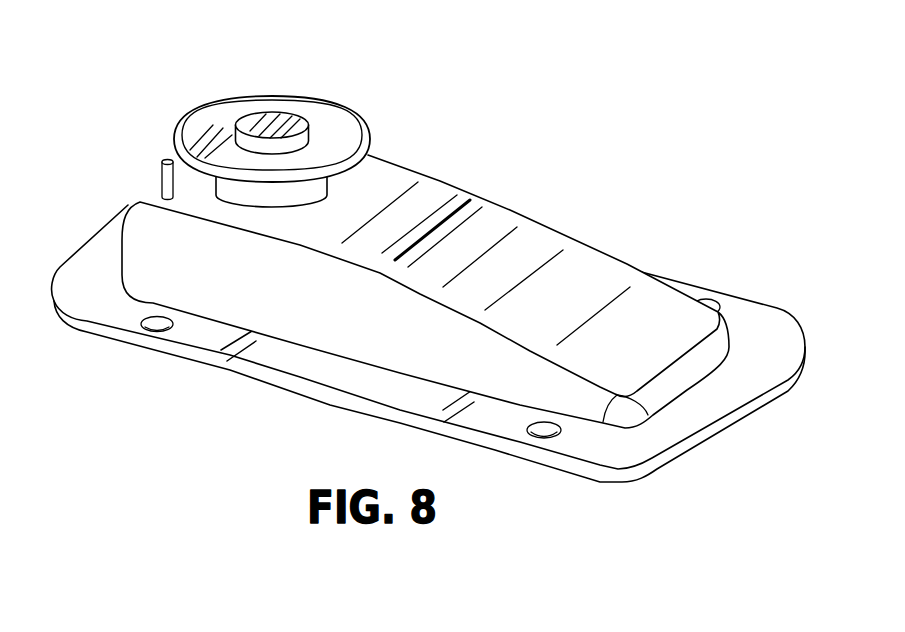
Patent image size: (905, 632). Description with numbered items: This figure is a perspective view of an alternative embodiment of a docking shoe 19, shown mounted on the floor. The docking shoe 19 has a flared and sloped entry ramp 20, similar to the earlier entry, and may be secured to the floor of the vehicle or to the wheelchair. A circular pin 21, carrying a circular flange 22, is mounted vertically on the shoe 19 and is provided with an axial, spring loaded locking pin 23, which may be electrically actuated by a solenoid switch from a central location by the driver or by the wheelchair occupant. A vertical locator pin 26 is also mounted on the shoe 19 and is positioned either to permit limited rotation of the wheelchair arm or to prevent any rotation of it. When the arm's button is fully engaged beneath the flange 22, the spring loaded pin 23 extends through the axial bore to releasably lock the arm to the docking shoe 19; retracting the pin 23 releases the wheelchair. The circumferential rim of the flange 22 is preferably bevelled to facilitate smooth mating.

The docking shoe 19 is at (423, 150).
The entry ramp 20 is at (537, 245).
The circular pin 21 is at (233, 193).
The circular flange 22 is at (218, 117).
The locking pin 23 is at (287, 122).
The vertical locator pin 26 is at (158, 167).